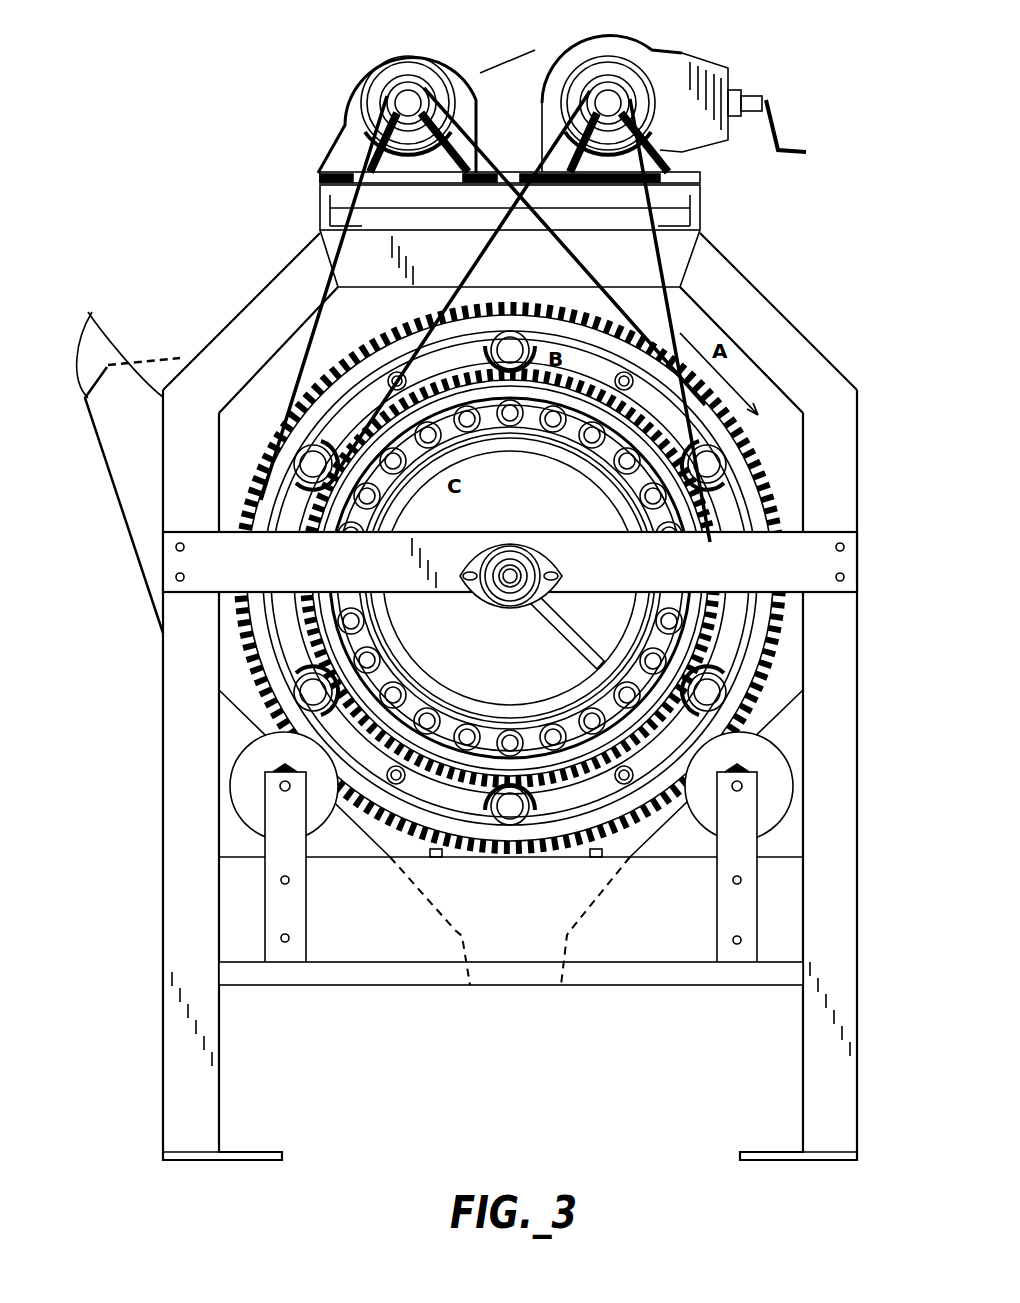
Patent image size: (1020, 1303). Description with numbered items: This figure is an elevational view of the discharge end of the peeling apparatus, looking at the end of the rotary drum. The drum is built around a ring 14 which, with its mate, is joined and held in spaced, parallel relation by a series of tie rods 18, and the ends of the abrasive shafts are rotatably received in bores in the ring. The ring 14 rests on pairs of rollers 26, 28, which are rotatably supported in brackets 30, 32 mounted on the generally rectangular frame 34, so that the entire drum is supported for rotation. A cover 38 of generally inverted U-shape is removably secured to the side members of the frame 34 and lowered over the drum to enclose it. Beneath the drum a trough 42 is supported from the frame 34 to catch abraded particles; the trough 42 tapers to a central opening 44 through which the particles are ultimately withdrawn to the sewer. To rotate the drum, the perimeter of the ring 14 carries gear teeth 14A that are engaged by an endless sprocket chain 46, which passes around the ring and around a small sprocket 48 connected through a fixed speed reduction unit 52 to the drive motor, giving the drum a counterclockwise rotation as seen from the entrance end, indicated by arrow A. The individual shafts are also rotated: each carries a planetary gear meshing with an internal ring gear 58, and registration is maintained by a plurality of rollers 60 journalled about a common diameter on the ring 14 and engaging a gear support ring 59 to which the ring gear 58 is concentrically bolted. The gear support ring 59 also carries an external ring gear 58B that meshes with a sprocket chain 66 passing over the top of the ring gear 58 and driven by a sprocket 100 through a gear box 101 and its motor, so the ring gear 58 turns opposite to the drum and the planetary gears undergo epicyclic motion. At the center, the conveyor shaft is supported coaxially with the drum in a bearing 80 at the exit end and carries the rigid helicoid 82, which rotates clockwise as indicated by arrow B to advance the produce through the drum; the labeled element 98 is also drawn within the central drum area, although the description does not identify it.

The ring 14 is at (762, 500).
The gear teeth 14A is at (778, 430).
The tie rods 18 is at (383, 840).
The roller 26 is at (790, 812).
The roller 28 is at (245, 805).
The bracket 30 is at (745, 900).
The bracket 32 is at (275, 905).
The frame 34 is at (822, 1040).
The cover 38 is at (119, 466).
The trough 42 is at (793, 675).
The central opening 44 is at (572, 1000).
The endless sprocket chain 46 is at (303, 357).
The small sprocket 48 is at (395, 96).
The fixed speed reduction unit 52 is at (392, 58).
The internal ring gear 58 is at (300, 652).
The external ring gear 58B is at (348, 603).
The gear support ring 59 is at (322, 633).
The rollers 60 is at (300, 450).
The sprocket chain 66 is at (695, 252).
The bearing 80 is at (520, 560).
The helicoid 82 is at (605, 618).
The drum 98 is at (450, 636).
The sprocket 100 is at (614, 88).
The gear box 101 is at (700, 62).